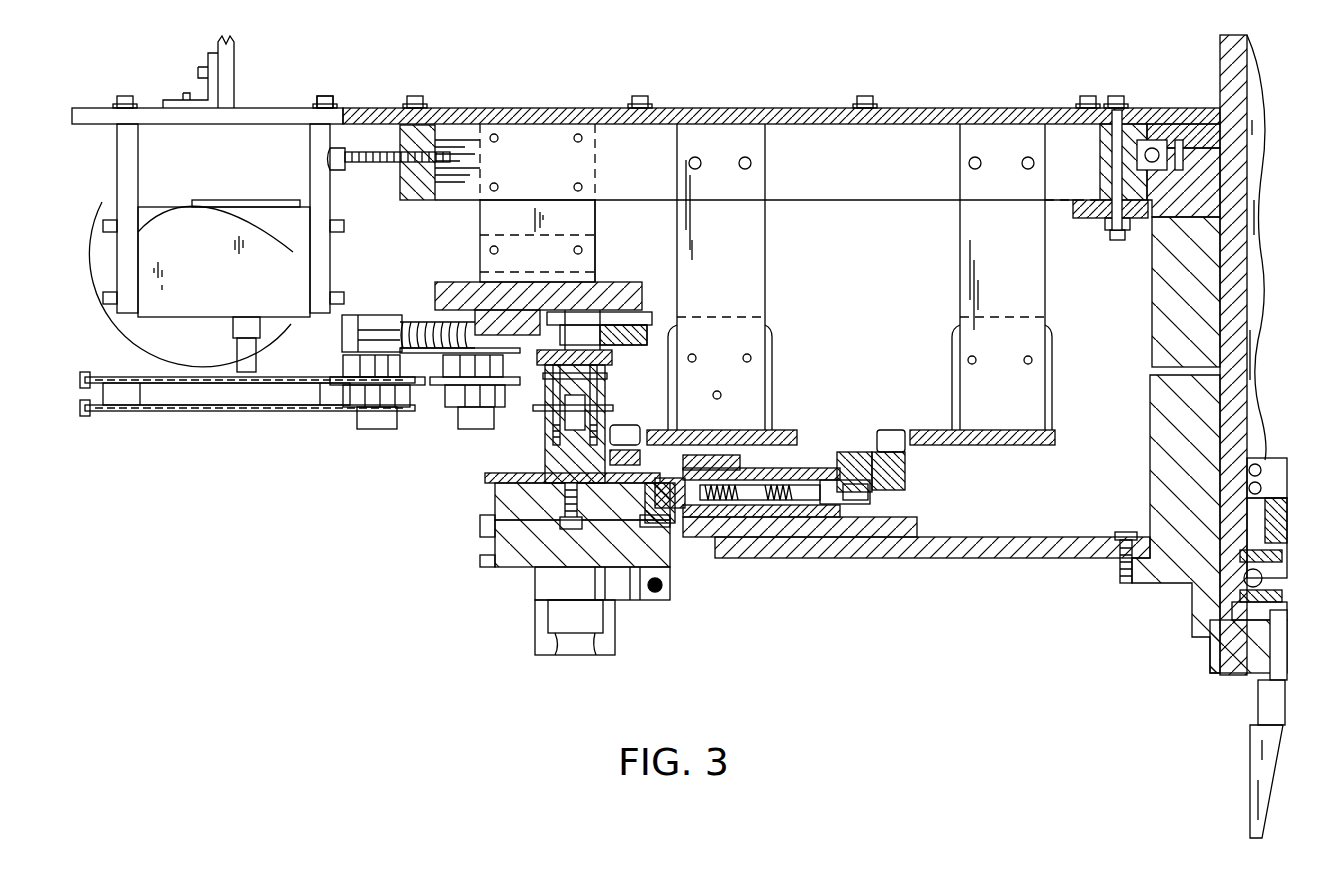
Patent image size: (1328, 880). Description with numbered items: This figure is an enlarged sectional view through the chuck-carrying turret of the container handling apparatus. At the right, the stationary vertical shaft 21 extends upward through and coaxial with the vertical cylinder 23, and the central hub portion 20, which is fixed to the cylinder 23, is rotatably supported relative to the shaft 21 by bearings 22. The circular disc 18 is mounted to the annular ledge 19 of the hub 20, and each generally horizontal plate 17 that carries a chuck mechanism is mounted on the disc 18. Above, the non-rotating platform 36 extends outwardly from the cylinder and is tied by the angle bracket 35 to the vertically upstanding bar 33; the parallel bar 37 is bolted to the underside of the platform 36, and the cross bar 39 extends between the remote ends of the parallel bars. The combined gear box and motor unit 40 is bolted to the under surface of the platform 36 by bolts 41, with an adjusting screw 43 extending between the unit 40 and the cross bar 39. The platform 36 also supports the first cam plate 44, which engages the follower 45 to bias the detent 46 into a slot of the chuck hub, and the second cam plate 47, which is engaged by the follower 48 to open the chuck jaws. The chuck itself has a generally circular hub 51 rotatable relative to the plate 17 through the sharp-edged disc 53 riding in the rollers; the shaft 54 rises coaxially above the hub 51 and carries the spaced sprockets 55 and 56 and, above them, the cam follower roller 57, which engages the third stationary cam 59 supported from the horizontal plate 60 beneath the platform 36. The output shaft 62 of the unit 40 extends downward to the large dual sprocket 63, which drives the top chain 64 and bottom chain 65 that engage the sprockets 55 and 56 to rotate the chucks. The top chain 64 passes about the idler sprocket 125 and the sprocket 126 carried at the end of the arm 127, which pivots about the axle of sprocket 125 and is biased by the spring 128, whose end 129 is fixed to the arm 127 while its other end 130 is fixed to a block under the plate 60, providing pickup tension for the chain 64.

The horizontal plate 17 is at (918, 527).
The circular plate or disc 18 is at (1000, 560).
The annular ledge 19 is at (1148, 583).
The central hub portion 20 is at (1152, 430).
The vertical shaft 21 is at (1258, 700).
The bearings 22 is at (1265, 555).
The vertical cylinder 23 is at (1240, 340).
The vertically upstanding bar 33 is at (237, 68).
The angle bracket 35 is at (165, 98).
The platform 36 is at (508, 108).
The parallel bar 37 is at (805, 160).
The cross bar 39 is at (420, 195).
The combined gear box and motor unit 40 is at (105, 250).
The bolts 41 is at (335, 100).
The adjusting screw 43 is at (375, 150).
The first cam plate 44 is at (1056, 436).
The follower 45 is at (885, 432).
The detent 46 is at (670, 525).
The second cam plate 47 is at (797, 430).
The follower 48 is at (635, 438).
The circular hub 51 is at (520, 565).
The circular plate or disc 53 is at (482, 485).
The shaft 54 is at (547, 458).
The sprocket 55 is at (612, 380).
The sprocket 56 is at (612, 408).
The cam follower roller 57 is at (642, 318).
The third stationary cam 59 is at (590, 325).
The horizontal plate 60 is at (612, 285).
The output shaft 62 is at (243, 365).
The dual sprocket 63 is at (160, 395).
The top chain 64 is at (80, 377).
The bottom chain 65 is at (80, 412).
The idler sprocket 125 is at (470, 412).
The sprocket 126 is at (395, 410).
The arm 127 is at (398, 325).
The spring 128 is at (428, 322).
The spring end 129 is at (390, 322).
The spring end 130 is at (515, 315).